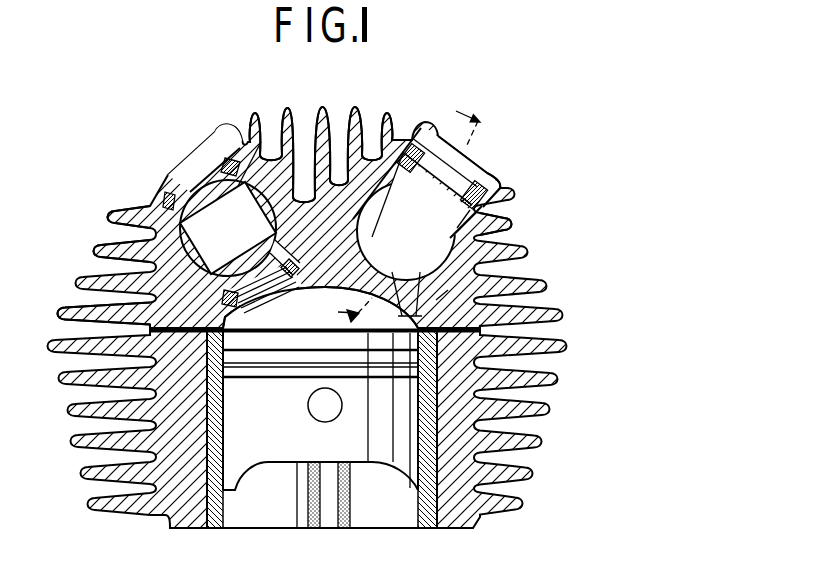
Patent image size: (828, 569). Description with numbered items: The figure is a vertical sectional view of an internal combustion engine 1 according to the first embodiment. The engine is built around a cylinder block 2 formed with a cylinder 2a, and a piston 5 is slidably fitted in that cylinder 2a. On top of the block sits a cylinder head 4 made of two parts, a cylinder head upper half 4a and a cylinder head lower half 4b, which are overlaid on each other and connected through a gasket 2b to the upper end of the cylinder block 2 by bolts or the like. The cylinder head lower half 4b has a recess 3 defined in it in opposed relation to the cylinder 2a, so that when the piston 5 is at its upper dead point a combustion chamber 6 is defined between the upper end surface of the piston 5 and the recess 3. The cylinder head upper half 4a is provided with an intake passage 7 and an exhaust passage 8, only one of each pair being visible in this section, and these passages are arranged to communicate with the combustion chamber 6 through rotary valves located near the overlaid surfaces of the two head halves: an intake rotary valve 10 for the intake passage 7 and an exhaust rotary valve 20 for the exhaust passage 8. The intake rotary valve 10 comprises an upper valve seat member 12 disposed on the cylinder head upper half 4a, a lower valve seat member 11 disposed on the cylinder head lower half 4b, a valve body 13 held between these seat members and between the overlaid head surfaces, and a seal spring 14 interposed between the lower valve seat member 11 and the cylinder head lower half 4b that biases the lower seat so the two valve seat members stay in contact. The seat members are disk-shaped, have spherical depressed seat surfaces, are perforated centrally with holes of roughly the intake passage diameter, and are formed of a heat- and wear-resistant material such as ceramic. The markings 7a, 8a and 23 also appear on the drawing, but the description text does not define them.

The internal combustion engine 1 is at (180, 153).
The cylinder block 2 is at (62, 375).
The cylinder 2a is at (228, 528).
The gasket 2b is at (100, 303).
The recess 3 is at (215, 322).
The cylinder head 4 is at (327, 118).
The cylinder head upper half 4a is at (112, 215).
The cylinder head lower half 4b is at (97, 251).
The piston 5 is at (292, 450).
The combustion chamber 6 is at (303, 307).
The intake passage 7 is at (432, 124).
The exhaust port 7a is at (354, 263).
The exhaust passage 8 is at (212, 152).
The intake port 8a is at (292, 277).
The intake rotary valve 10 is at (480, 217).
The lower valve seat member 11 is at (452, 288).
The upper valve seat member 12 is at (499, 180).
The valve body 13 is at (496, 233).
The seal spring 14 is at (417, 304).
The exhaust rotary valve 20 is at (185, 213).
The valve stem seal 23 is at (217, 197).